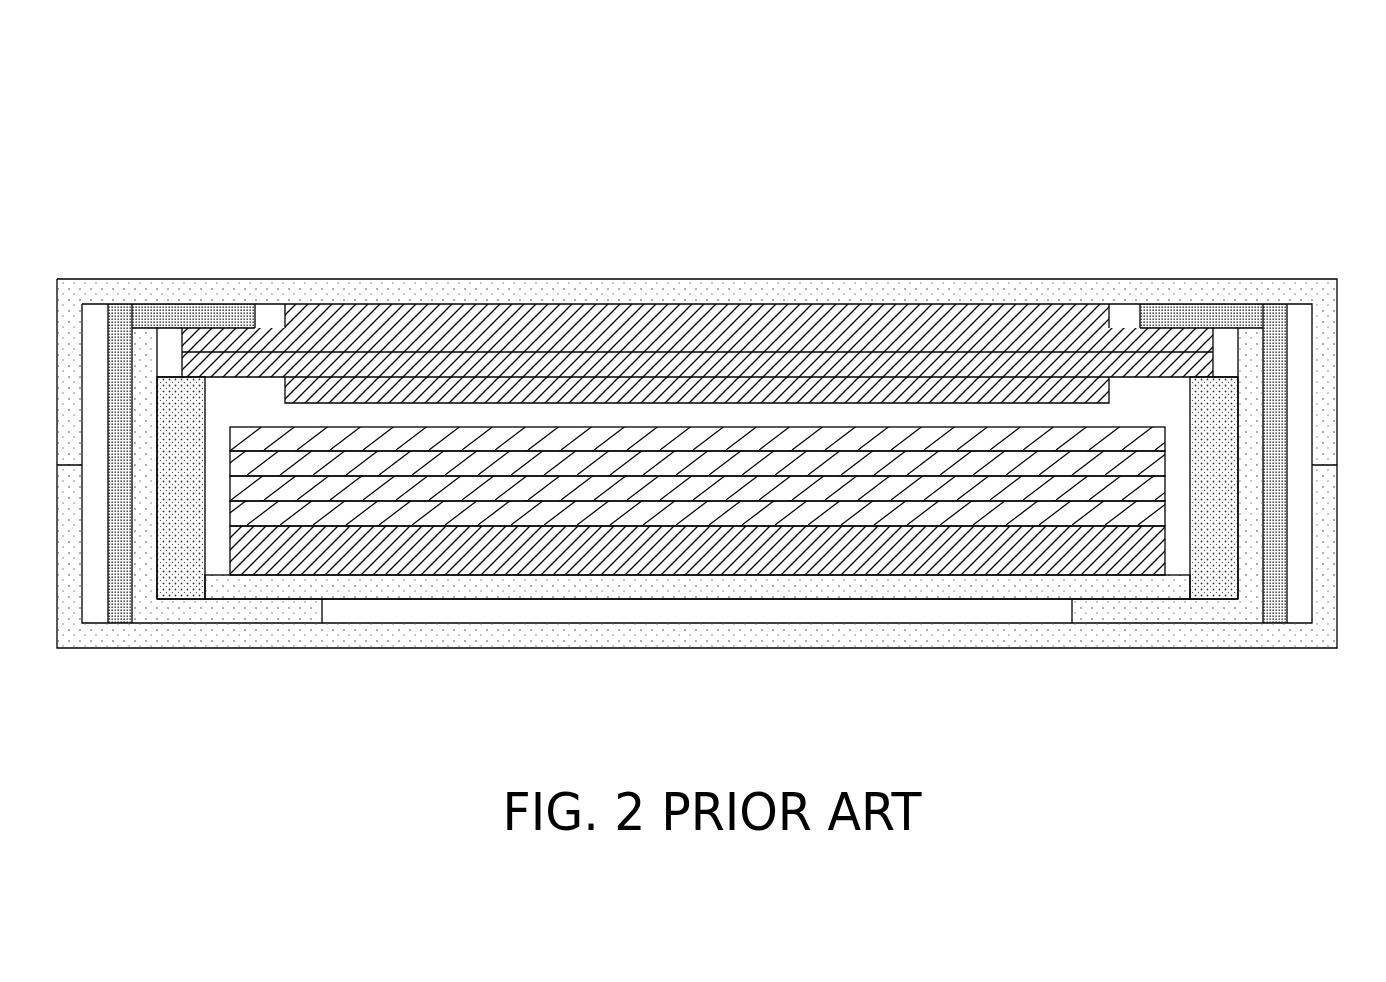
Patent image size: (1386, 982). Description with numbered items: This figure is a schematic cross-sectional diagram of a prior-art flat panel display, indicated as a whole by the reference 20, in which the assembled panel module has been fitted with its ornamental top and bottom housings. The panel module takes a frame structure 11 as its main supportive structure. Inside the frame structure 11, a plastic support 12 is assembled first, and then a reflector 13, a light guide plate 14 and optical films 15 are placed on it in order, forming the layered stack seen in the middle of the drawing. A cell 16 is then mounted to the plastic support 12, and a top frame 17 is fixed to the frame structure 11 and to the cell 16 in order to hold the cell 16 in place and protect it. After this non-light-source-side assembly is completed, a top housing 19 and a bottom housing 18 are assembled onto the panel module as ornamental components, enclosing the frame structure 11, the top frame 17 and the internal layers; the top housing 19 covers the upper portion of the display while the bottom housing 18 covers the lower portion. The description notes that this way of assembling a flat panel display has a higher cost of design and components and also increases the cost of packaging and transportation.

The frame structure 11 is at (258, 608).
The plastic support 12 is at (170, 585).
The reflector 13 is at (627, 590).
The light guide plate 14 is at (572, 550).
The optical films 15 is at (810, 512).
The cell 16 is at (901, 365).
The top frame 17 is at (136, 313).
The bottom housing 18 is at (1323, 532).
The top housing 19 is at (1323, 428).
The prior art battery cell 20 is at (1241, 133).